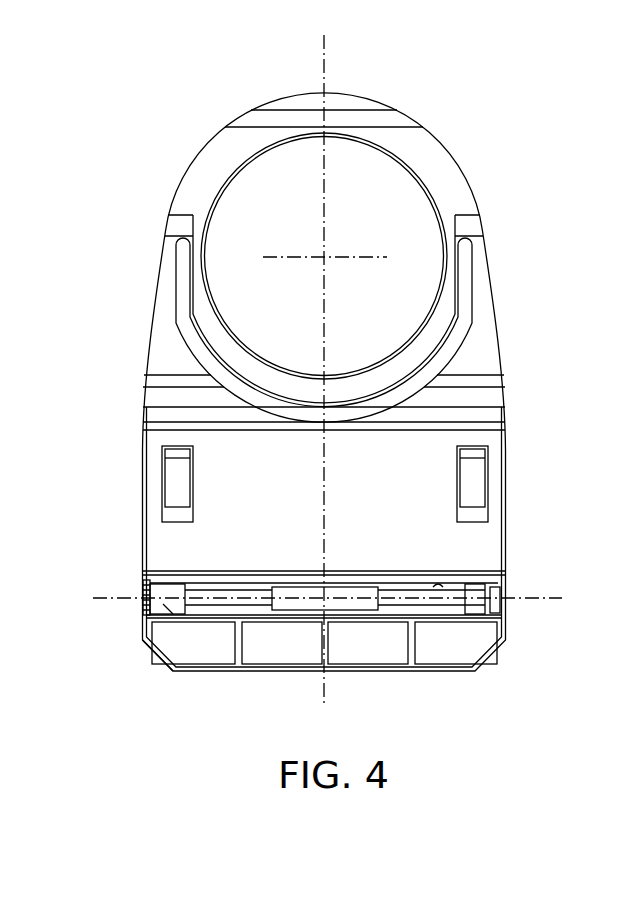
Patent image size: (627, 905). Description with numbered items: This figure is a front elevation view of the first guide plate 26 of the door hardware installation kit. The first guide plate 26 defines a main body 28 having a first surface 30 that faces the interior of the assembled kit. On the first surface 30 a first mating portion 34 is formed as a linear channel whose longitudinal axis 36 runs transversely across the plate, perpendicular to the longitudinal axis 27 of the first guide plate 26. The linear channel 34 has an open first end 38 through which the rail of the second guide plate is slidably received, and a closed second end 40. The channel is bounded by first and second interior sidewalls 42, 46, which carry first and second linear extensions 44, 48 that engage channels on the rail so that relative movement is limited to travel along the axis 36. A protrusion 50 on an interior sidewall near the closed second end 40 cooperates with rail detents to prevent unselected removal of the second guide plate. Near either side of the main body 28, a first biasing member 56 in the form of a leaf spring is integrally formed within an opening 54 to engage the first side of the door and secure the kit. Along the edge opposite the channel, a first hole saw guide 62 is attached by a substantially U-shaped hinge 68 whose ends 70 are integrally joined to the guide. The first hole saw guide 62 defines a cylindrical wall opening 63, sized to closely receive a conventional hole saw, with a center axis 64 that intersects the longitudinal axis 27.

The first guide plate 26 is at (134, 109).
The longitudinal axis 27 is at (326, 63).
The main body 28 is at (140, 545).
The first surface 30 is at (270, 504).
The first mating portion 34 is at (225, 603).
The longitudinal axis 36 is at (295, 598).
The open first end 38 is at (143, 605).
The closed second end 40 is at (500, 603).
The first interior sidewall 42 is at (155, 655).
The first linear extension 44 is at (407, 612).
The second interior sidewall 46 is at (193, 585).
The second linear extension 48 is at (445, 585).
The protrusion 50 is at (483, 590).
The opening 54 is at (163, 512).
The first biasing member 56 is at (167, 468).
The first hole saw guide 62 is at (438, 117).
The cylindrical wall opening 63 is at (238, 192).
The center axis 64 is at (322, 255).
The hinge 68 is at (148, 333).
The end 70 is at (160, 252).